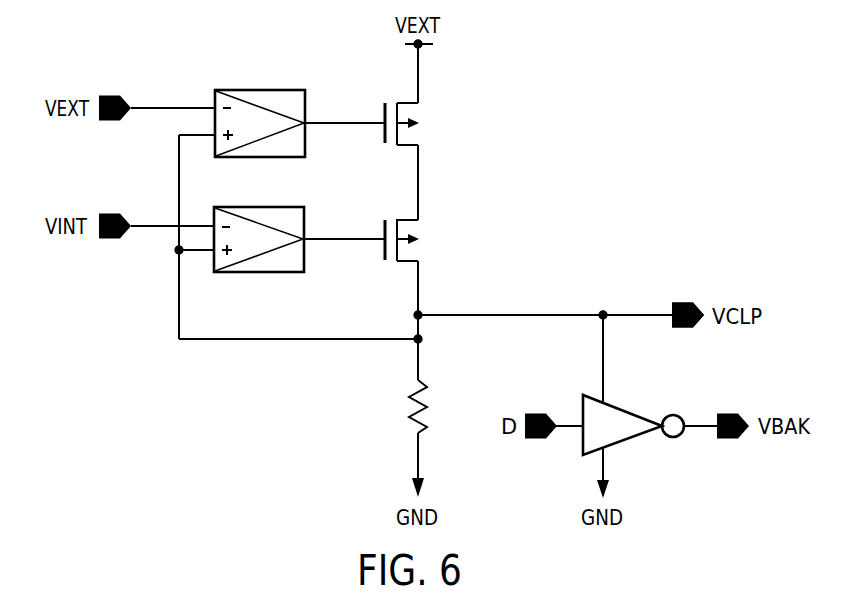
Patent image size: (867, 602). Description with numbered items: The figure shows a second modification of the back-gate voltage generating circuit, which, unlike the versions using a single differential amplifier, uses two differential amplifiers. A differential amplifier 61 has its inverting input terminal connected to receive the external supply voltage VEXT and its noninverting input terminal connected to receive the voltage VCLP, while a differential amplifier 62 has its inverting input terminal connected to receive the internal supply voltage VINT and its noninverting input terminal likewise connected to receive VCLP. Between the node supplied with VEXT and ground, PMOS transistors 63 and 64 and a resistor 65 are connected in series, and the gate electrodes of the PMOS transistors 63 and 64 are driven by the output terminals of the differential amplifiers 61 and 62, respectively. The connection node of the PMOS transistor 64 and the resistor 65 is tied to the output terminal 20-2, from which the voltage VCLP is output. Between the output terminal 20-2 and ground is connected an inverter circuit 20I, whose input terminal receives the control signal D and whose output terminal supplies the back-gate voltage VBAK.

The differential amplifier 61 is at (265, 88).
The differential amplifier 62 is at (263, 275).
The PMOS transistor 63 is at (398, 99).
The PMOS transistor 64 is at (398, 215).
The resistor 65 is at (406, 398).
The output terminal 20-2 is at (681, 302).
The inverter circuit 20I is at (630, 405).